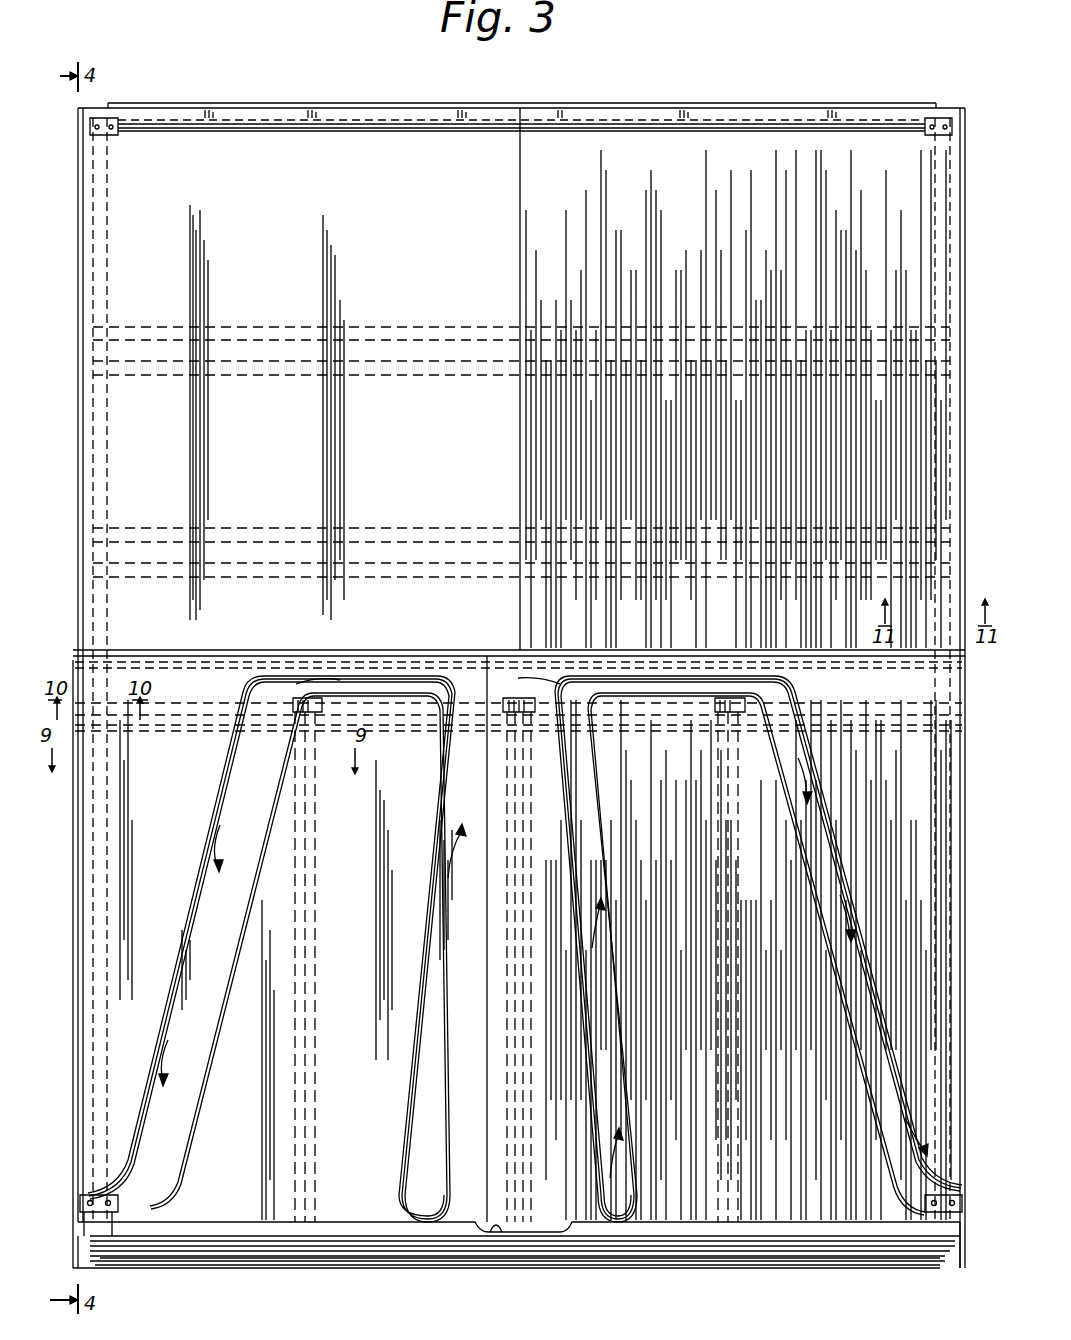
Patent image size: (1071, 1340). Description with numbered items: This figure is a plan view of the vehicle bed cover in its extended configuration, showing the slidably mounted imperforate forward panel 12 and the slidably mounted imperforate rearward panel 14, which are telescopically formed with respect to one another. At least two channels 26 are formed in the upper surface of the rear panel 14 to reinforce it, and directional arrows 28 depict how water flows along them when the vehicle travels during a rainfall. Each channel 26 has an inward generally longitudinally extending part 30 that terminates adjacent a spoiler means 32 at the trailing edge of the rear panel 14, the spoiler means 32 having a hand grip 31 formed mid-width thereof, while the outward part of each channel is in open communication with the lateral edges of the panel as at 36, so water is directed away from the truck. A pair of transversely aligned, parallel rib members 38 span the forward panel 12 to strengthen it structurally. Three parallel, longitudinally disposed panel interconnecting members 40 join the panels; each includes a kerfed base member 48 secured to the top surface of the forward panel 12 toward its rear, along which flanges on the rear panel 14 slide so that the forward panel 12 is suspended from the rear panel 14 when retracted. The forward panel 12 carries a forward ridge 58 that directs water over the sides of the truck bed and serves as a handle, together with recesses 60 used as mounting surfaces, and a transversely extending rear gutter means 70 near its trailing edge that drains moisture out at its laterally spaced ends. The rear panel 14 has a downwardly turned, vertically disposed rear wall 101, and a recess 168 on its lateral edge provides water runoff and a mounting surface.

The forward panel 12 is at (135, 418).
The rearward panel 14 is at (890, 798).
The channel 26 is at (163, 1025).
The directional arrows 28 is at (560, 652).
The inward longitudinally extending part 30 is at (425, 1052).
The hand grip 31 is at (500, 1232).
The spoiler means 32 is at (340, 1236).
The lateral edge opening 36 is at (96, 1186).
The rib members 38 is at (402, 330).
The panel interconnecting members 40 is at (298, 930).
The base member 48 is at (298, 708).
The forward ridge 58 is at (476, 137).
The recesses 60 is at (118, 133).
The rear gutter means 70 is at (188, 704).
The rear wall 101 is at (424, 1246).
The recess 168 is at (108, 1213).